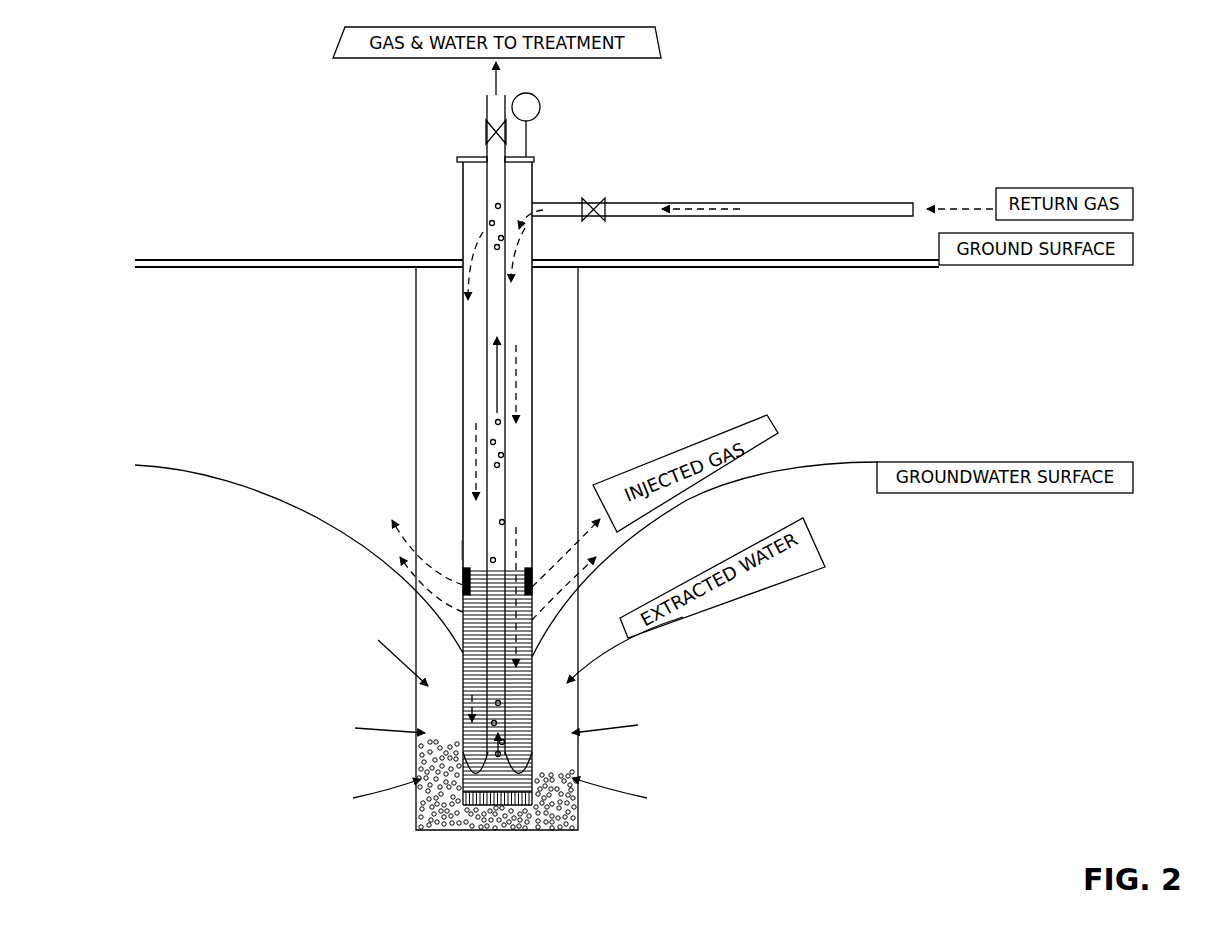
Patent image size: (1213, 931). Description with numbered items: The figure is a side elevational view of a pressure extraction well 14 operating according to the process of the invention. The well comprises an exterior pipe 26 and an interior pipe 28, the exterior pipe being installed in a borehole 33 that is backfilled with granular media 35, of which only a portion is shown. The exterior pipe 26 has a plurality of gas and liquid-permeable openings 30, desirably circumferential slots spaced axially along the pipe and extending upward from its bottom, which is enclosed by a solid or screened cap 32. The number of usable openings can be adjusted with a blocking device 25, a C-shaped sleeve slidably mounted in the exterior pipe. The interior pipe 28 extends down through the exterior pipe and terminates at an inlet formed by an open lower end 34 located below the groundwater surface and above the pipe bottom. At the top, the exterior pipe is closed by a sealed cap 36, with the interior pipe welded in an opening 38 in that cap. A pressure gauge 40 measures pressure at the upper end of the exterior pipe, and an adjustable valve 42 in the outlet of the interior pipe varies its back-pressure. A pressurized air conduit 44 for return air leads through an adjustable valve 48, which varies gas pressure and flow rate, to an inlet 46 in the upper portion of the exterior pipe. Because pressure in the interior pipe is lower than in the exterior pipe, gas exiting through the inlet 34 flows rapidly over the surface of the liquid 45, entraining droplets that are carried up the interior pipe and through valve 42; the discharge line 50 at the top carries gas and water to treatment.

The pressure extraction well 14 is at (535, 442).
The blocking device 25 is at (462, 540).
The exterior pipe 26 is at (533, 340).
The interior pipe 28 is at (505, 308).
The gas and liquid-permeable openings 30 is at (533, 697).
The cap 32 is at (483, 830).
The borehole 33 is at (578, 382).
The open lower end 34 is at (533, 772).
The granular media 35 is at (579, 822).
The sealed cap 36 is at (535, 157).
The opening 38 is at (458, 157).
The pressure gauge 40 is at (538, 100).
The adjustable valve 42 is at (487, 124).
The pressurized air conduit 44 is at (714, 217).
The liquid 45 is at (456, 782).
The inlet 46 is at (534, 195).
The adjustable valve 48 is at (591, 198).
The discharge line 50 is at (487, 93).